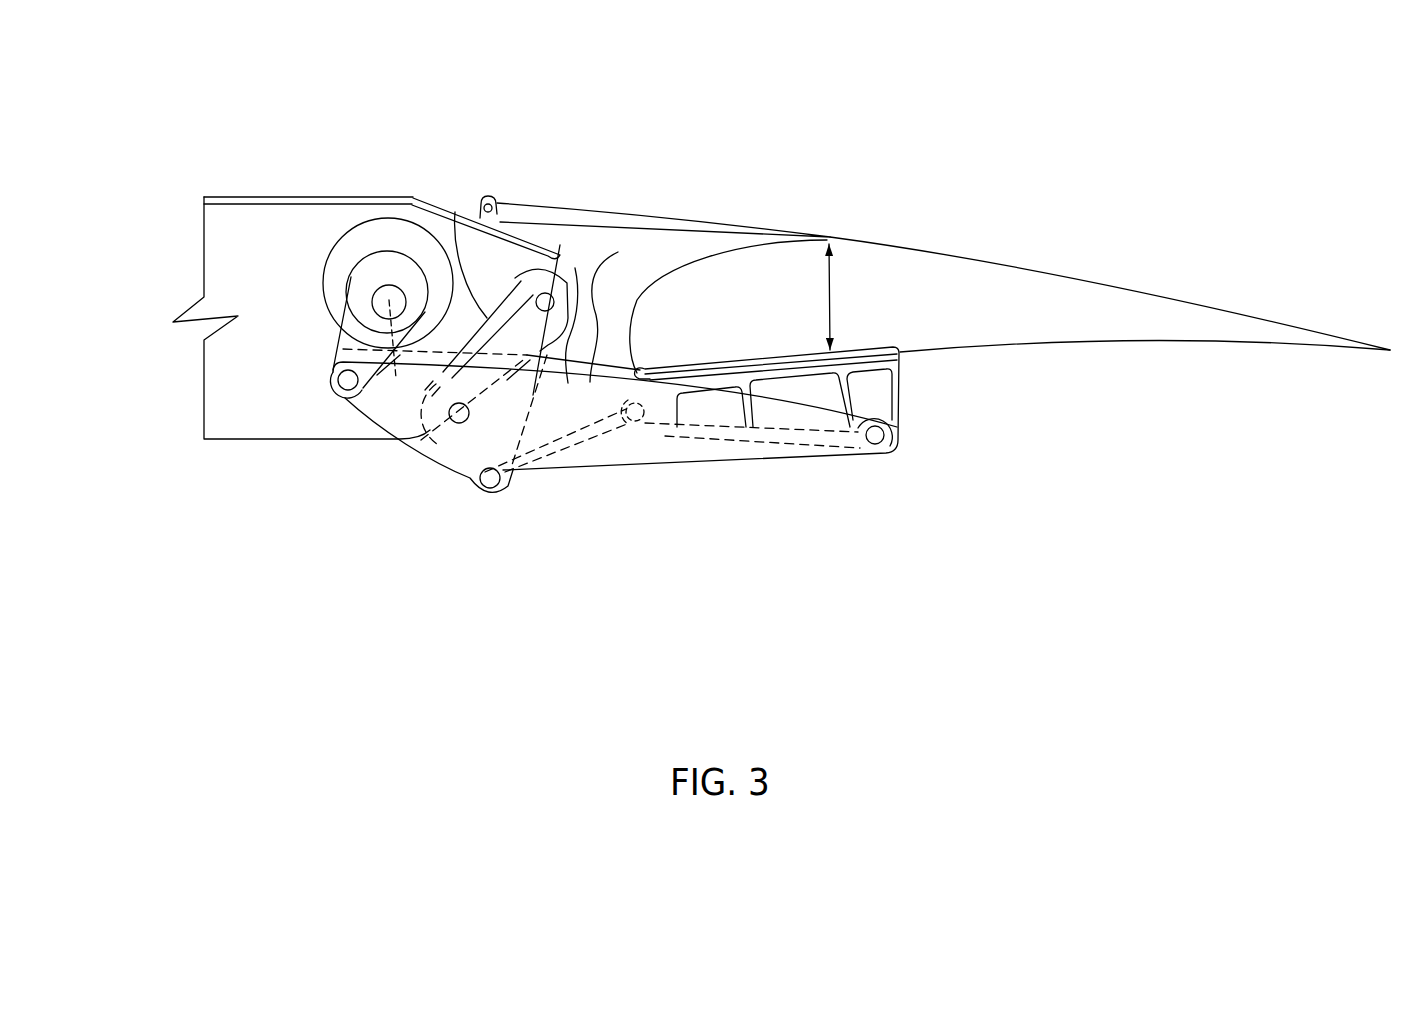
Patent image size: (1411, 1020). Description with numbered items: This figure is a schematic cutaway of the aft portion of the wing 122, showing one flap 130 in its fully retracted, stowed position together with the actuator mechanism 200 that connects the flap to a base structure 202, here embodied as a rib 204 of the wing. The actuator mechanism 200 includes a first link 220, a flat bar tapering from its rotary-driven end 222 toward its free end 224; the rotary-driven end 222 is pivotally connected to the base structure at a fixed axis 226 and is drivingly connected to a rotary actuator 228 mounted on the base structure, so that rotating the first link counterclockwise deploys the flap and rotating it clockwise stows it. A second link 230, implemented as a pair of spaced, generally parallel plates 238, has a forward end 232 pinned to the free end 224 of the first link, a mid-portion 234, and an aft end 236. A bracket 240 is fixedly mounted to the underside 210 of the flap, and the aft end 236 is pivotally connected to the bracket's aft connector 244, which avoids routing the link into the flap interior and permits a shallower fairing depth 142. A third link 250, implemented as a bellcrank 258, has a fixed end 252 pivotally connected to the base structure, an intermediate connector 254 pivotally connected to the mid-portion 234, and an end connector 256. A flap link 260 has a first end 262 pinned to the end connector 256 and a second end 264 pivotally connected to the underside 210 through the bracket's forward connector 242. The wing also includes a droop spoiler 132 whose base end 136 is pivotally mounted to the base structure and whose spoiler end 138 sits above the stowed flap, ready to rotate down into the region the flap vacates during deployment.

The wing 122 is at (188, 497).
The flap 130 is at (1027, 267).
The droop spoiler 132 is at (727, 210).
The base end 136 is at (500, 192).
The spoiler end 138 is at (840, 223).
The fairing depth 142 is at (834, 300).
The actuator mechanism 200 is at (640, 615).
The base structure 202 is at (124, 392).
The rib 204 is at (204, 380).
The underside 210 is at (1177, 342).
The first link 220 is at (350, 300).
The rotary-driven end 222 is at (380, 277).
The free end 224 is at (297, 438).
The fixed axis 226 is at (347, 337).
The rotary actuator 228 is at (330, 252).
The second link 230 is at (616, 470).
The forward end 232 is at (345, 398).
The mid-portion 234 is at (467, 448).
The aft end 236 is at (929, 478).
The plates 238 is at (696, 308).
The bracket 240 is at (900, 390).
The forward connector 242 is at (652, 426).
The aft connector 244 is at (884, 457).
The third link 250 is at (456, 203).
The fixed end 252 is at (557, 263).
The intermediate connector 254 is at (445, 437).
The end connector 256 is at (552, 525).
The bellcrank 258 is at (558, 258).
The flap link 260 is at (557, 458).
The first end 262 is at (497, 492).
The second end 264 is at (740, 460).